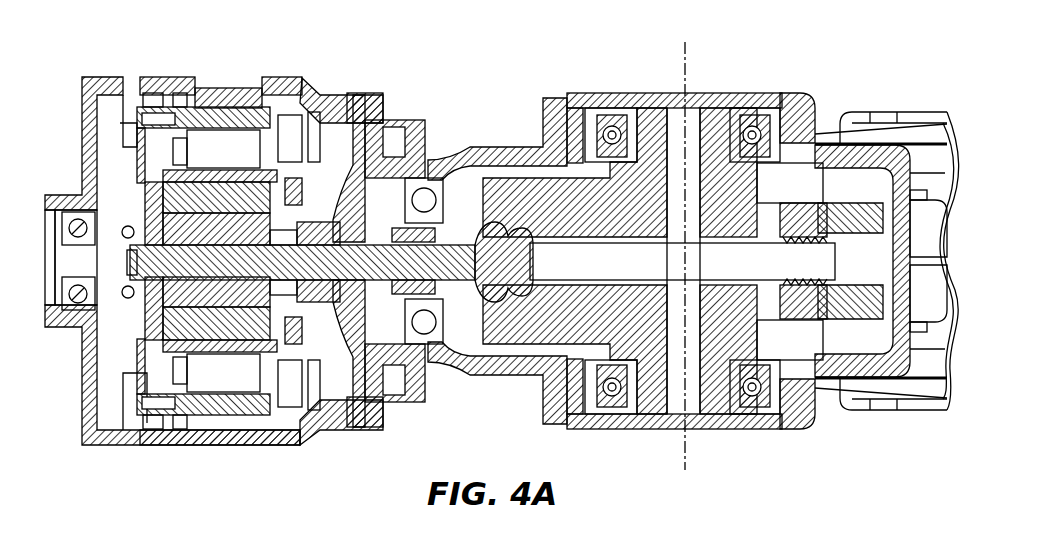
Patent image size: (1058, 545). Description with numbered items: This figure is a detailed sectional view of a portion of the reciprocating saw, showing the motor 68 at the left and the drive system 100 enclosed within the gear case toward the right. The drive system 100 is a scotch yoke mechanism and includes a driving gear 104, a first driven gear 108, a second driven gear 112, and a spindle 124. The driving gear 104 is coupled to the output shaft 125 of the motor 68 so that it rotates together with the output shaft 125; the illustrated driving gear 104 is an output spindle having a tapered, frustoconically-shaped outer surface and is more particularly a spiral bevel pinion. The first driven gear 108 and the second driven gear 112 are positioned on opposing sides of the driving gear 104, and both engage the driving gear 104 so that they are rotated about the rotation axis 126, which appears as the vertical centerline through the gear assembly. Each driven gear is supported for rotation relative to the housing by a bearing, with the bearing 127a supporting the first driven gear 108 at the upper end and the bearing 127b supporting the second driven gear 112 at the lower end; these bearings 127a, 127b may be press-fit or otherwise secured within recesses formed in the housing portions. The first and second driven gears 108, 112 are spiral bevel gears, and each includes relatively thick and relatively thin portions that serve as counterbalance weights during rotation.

The motor 68 is at (245, 62).
The drive system 100 is at (514, 128).
The driving gear 104 is at (493, 252).
The first driven gear 108 is at (847, 270).
The second driven gear 112 is at (847, 300).
The spindle 124 is at (730, 260).
The output shaft 125 is at (233, 258).
The rotation axis 126 is at (688, 80).
The bearing 127a is at (627, 110).
The bearing 127b is at (612, 398).